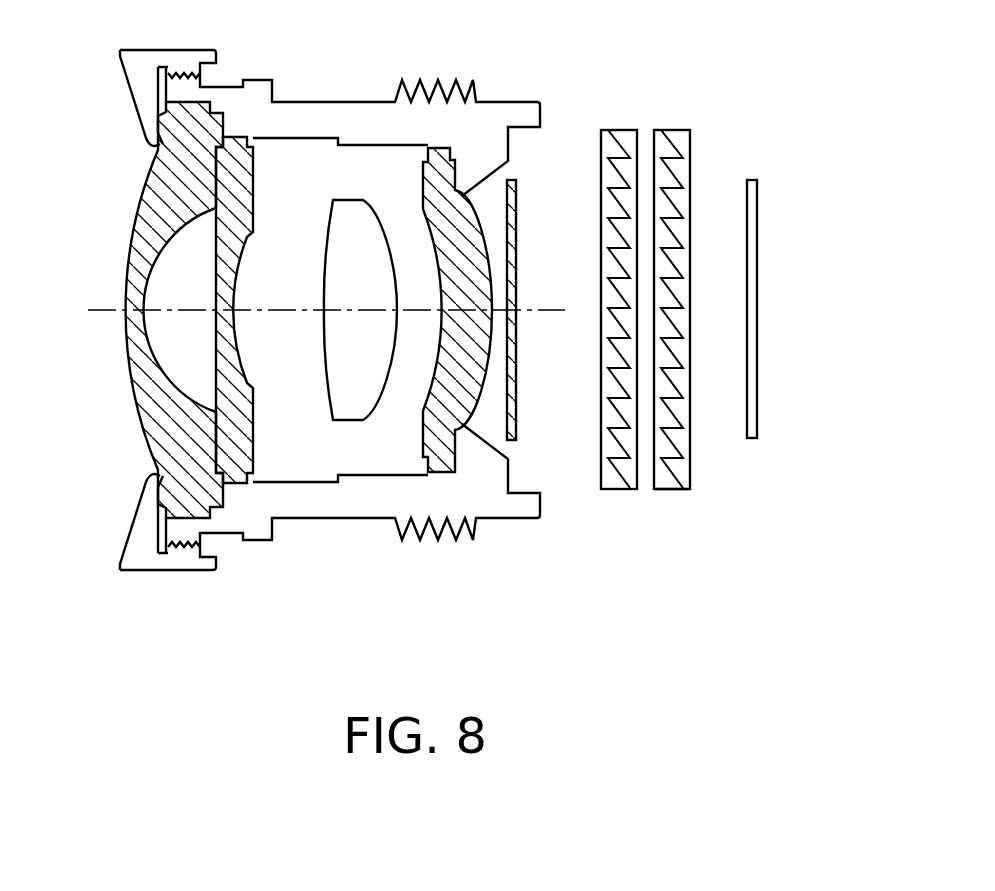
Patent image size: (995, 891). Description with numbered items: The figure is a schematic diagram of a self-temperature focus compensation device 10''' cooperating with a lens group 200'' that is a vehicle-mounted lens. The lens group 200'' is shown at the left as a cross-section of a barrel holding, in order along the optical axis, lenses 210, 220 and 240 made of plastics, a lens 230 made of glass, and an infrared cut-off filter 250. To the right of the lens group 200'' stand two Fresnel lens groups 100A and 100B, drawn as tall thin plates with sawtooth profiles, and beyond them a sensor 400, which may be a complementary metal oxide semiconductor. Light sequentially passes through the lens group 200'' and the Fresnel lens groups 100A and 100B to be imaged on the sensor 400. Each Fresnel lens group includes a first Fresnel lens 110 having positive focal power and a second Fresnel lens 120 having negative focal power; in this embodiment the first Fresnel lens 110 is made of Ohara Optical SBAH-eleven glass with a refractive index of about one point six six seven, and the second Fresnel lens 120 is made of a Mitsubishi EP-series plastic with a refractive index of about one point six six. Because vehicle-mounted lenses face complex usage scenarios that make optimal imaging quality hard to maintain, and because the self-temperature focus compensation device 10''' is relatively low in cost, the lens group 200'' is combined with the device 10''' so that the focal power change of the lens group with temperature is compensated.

The self-temperature focus compensation device 10''' is at (475, 166).
The Fresnel lens group 100A is at (637, 120).
The Fresnel lens group 100B is at (690, 120).
The first Fresnel lens 110 is at (656, 490).
The second Fresnel lens 120 is at (685, 490).
The lens group 200'' is at (295, 310).
The lens 210 is at (142, 424).
The lens 220 is at (237, 477).
The lens 230 is at (350, 420).
The lens 240 is at (445, 458).
The infrared cut-off filter 250 is at (517, 430).
The sensor 400 is at (753, 411).